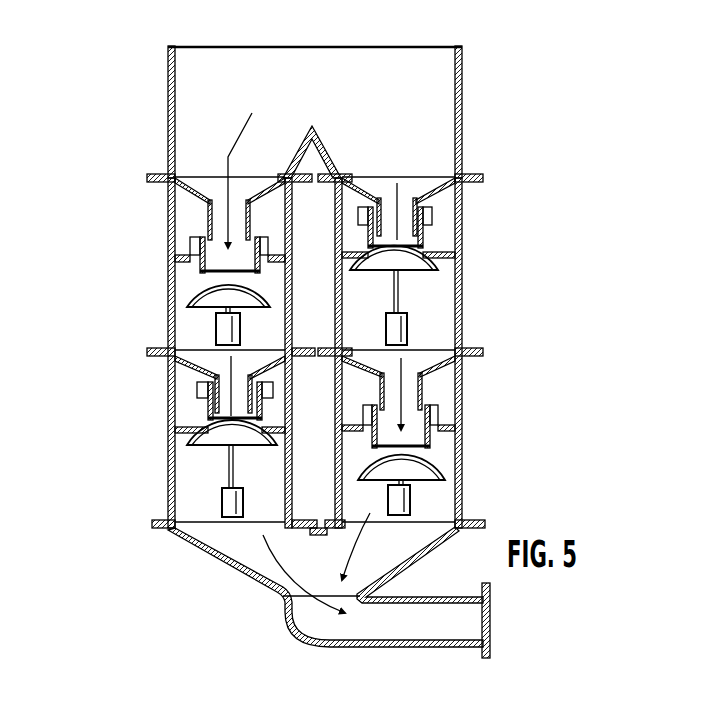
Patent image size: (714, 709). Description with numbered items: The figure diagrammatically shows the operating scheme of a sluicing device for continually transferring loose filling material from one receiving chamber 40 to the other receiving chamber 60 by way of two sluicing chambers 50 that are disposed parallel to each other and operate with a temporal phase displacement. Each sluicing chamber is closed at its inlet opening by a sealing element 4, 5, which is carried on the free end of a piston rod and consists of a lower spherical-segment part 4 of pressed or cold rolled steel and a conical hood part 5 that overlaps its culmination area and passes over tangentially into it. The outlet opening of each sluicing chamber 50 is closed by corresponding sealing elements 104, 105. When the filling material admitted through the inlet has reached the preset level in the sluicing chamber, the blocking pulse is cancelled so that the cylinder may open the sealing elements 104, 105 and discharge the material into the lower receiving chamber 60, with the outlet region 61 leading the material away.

The receiving chamber 40 is at (202, 103).
The spherical-segment part 4 is at (322, 261).
The conical hood part 5 is at (200, 297).
The sluicing chamber 50 is at (200, 324).
The sealing element (spherical-segment part) of the outlet opening 104 is at (315, 436).
The sealing element (hood part) of the outlet opening 105 is at (205, 432).
The receiving chamber 60 is at (193, 478).
The outlet hopper 61 is at (262, 545).